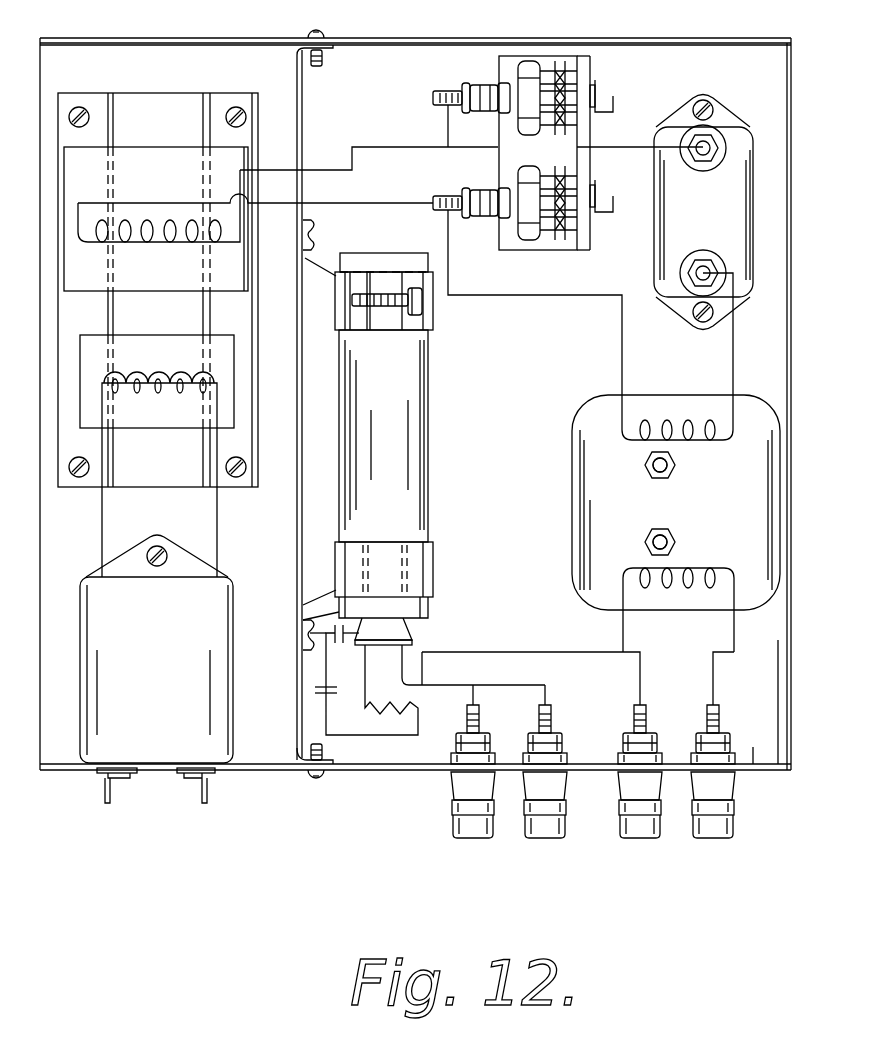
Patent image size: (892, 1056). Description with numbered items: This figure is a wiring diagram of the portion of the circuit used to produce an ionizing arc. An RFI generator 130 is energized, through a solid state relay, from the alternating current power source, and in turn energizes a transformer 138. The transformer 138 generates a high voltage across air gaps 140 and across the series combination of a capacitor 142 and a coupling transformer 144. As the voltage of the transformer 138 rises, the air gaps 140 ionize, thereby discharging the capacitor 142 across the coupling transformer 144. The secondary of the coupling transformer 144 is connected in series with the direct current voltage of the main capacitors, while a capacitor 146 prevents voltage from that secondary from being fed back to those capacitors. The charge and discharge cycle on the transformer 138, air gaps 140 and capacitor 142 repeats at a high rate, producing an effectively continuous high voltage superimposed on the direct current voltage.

The RFI generator 130 is at (187, 686).
The transformer 138 is at (243, 444).
The air gaps 140 is at (613, 84).
The capacitor 142 is at (735, 217).
The coupling transformer 144 is at (760, 511).
The capacitor 146 is at (407, 448).